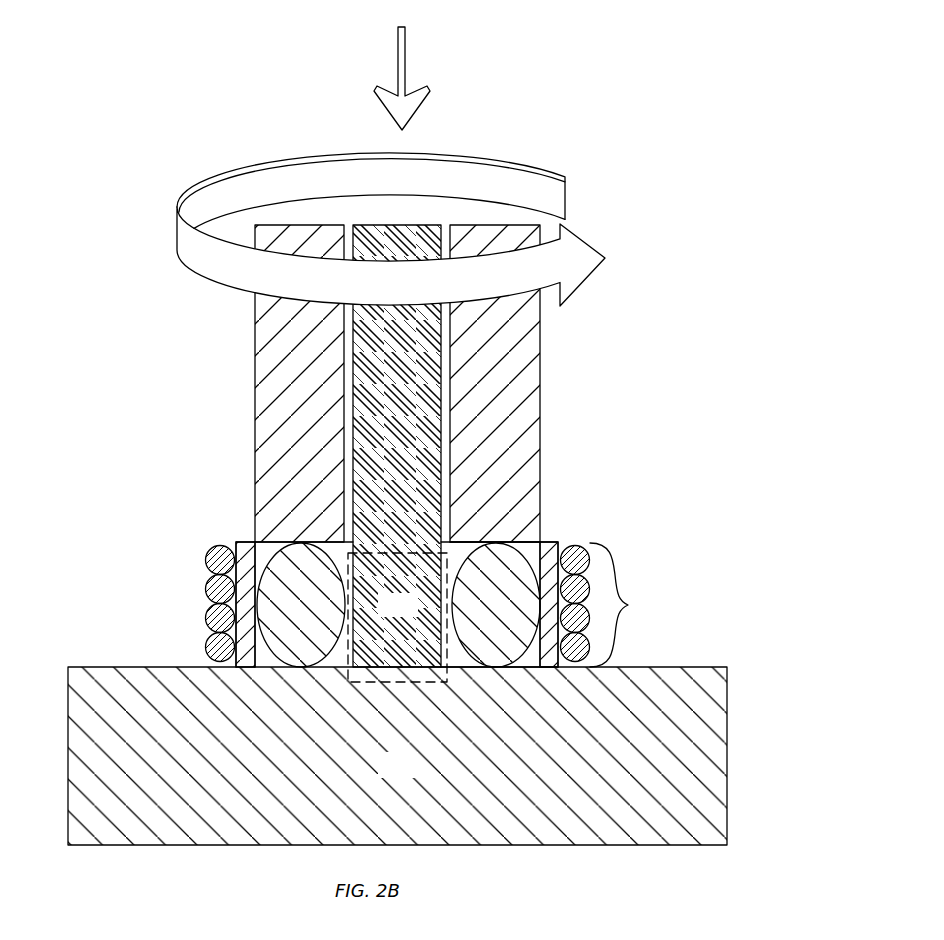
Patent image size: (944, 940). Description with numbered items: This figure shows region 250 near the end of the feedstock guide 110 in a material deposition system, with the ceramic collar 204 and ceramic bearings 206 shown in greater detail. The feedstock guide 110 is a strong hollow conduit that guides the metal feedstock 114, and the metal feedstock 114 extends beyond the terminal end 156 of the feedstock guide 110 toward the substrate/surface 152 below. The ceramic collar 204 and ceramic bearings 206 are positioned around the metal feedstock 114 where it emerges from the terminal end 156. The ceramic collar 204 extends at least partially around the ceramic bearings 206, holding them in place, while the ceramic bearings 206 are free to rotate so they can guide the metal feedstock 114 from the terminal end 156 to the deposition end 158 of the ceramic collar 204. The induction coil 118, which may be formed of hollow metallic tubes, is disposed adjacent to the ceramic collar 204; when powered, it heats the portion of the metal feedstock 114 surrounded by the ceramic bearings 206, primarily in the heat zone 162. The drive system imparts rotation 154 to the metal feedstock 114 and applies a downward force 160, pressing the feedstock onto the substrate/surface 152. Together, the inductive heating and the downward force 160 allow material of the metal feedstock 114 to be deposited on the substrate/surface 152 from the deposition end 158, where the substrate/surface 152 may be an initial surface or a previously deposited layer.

The region 250 is at (208, 144).
The feedstock guide 110 is at (278, 418).
The metal feedstock 114 is at (412, 428).
The rotation 154 is at (473, 153).
The downward force 160 is at (406, 60).
The terminal end 156 is at (464, 538).
The deposition end 158 is at (454, 672).
The heat zone 162 is at (397, 617).
The ceramic collar 204 is at (245, 540).
The ceramic bearings 206 is at (282, 594).
The induction coil 118 is at (632, 605).
The substrate/surface 152 is at (397, 756).